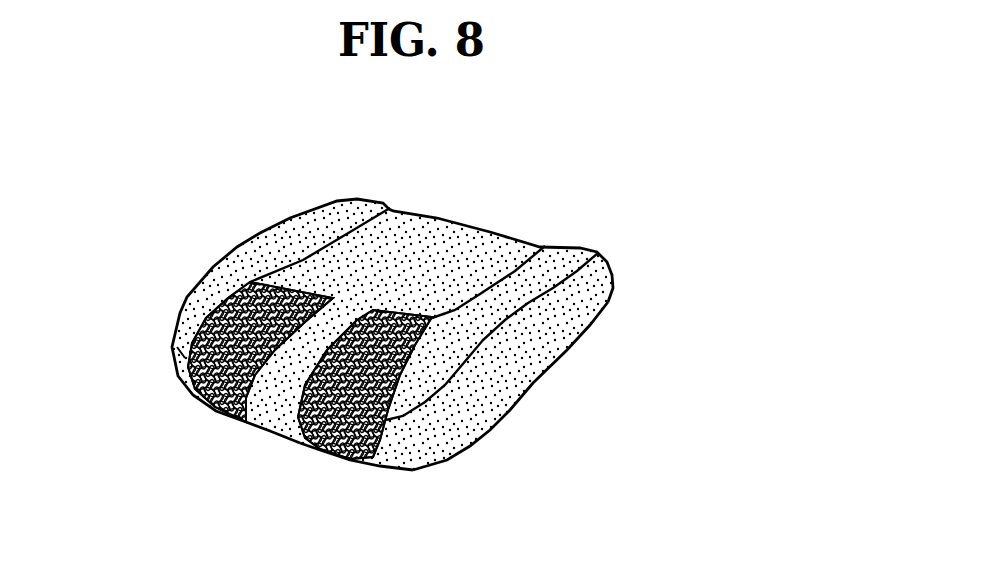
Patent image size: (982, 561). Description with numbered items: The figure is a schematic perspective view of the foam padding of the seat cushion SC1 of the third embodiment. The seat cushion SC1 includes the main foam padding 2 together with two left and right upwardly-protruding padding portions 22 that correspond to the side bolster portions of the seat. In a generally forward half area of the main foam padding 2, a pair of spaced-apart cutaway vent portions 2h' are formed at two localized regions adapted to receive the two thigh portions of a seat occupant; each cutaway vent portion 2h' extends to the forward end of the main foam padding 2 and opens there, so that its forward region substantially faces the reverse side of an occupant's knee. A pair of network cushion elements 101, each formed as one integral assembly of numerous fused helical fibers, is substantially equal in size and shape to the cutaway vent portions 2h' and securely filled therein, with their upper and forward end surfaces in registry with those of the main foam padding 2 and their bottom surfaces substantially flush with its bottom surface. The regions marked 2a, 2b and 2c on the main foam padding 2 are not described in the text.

The seat cushion SC1 is at (265, 176).
The main foam padding 2 is at (480, 243).
The seating surface of cushion pad 2a is at (415, 233).
The front side surface of cushion pad 2b is at (504, 418).
The lower front surface of cushion pad 2c is at (273, 424).
The upwardly-protruding padding portion 22 is at (233, 268).
The cutaway vent portion 2h' is at (339, 296).
The network cushion element 101 is at (215, 405).